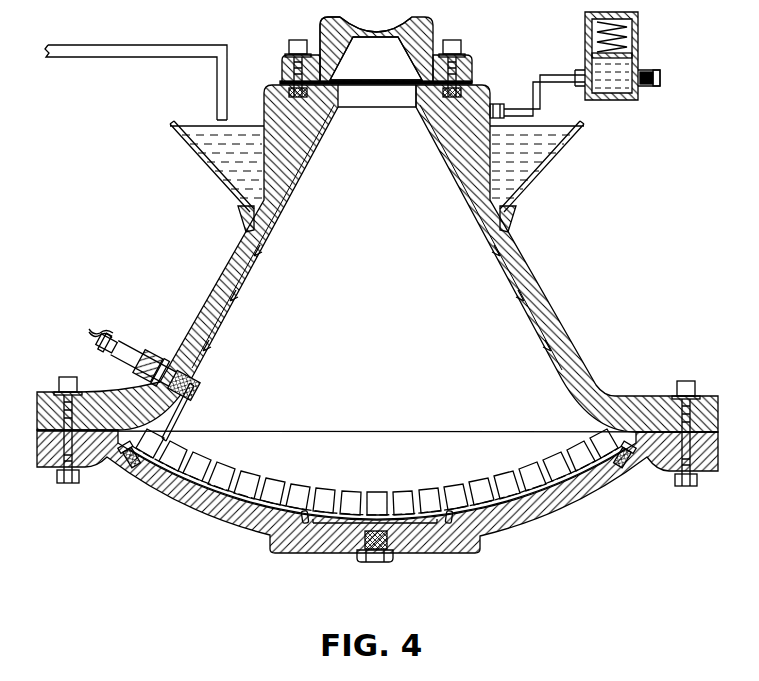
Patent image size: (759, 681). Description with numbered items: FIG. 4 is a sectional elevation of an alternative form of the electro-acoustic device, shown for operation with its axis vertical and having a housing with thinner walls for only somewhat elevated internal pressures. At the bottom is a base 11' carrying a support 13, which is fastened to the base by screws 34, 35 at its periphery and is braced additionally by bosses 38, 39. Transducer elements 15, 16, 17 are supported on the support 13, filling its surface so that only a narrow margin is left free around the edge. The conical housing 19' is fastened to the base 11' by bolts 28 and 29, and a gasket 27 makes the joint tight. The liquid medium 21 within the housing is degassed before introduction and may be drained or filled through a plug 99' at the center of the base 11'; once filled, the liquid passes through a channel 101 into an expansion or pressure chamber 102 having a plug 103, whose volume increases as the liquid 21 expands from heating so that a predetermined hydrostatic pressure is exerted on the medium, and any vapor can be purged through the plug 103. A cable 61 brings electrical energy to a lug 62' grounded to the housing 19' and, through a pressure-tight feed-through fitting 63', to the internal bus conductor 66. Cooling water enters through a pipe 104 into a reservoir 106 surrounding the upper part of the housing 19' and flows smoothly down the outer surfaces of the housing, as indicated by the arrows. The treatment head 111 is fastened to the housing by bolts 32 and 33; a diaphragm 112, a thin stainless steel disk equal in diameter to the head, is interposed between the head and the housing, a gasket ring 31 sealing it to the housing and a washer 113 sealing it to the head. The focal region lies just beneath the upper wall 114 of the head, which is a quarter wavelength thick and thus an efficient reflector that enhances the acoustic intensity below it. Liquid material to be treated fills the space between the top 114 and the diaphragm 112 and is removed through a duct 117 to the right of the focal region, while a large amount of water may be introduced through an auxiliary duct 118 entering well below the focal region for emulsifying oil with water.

The base 11' is at (377, 507).
The support 13 is at (544, 492).
The element 15 is at (163, 436).
The element 16 is at (186, 449).
The element 17 is at (218, 456).
The housing 19' is at (377, 258).
The liquid medium 21 is at (377, 239).
The gasket 27 is at (648, 437).
The bolt 28 is at (688, 380).
The bolt 29 is at (64, 377).
The gasket ring 31 is at (414, 85).
The bolt 32 is at (462, 45).
The bolt 33 is at (287, 44).
The screw 34 is at (619, 462).
The screw 35 is at (128, 456).
The boss 38 is at (448, 522).
The boss 39 is at (303, 522).
The cable 61 is at (113, 333).
The lug 62' is at (102, 354).
The pressure-tight feed-through fitting 63' is at (155, 356).
The internal bus conductor 66 is at (188, 400).
The plug 99' is at (375, 563).
The channel 101 is at (490, 108).
The expansion or pressure chamber 102 is at (638, 55).
The plug 103 is at (659, 80).
The pipe 104 is at (71, 50).
The reservoir 106 is at (172, 128).
The head 111 is at (433, 28).
The diaphragm 112 is at (377, 85).
The washer 113 is at (281, 82).
The upper wall 114 is at (376, 36).
The duct 117 is at (427, 24).
The auxiliary duct 118 is at (322, 40).